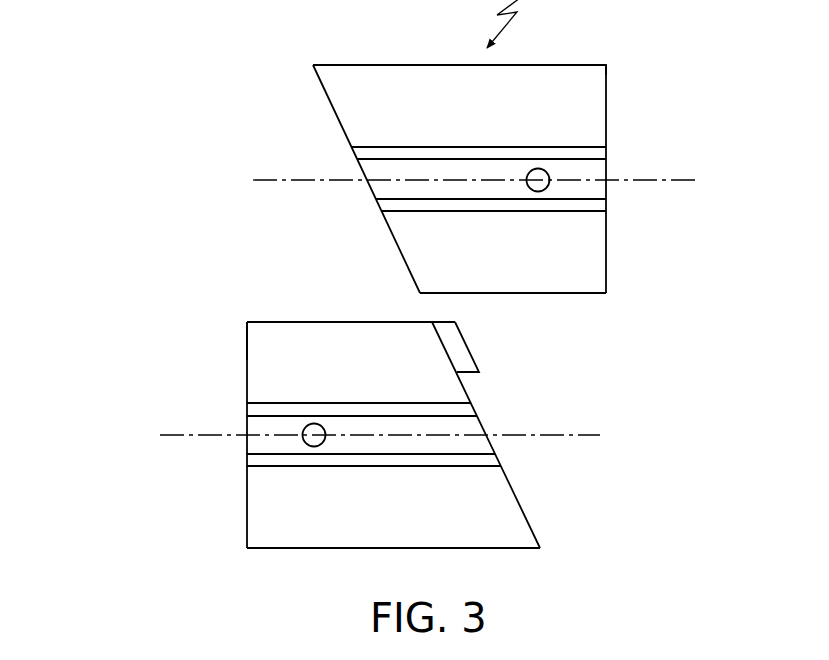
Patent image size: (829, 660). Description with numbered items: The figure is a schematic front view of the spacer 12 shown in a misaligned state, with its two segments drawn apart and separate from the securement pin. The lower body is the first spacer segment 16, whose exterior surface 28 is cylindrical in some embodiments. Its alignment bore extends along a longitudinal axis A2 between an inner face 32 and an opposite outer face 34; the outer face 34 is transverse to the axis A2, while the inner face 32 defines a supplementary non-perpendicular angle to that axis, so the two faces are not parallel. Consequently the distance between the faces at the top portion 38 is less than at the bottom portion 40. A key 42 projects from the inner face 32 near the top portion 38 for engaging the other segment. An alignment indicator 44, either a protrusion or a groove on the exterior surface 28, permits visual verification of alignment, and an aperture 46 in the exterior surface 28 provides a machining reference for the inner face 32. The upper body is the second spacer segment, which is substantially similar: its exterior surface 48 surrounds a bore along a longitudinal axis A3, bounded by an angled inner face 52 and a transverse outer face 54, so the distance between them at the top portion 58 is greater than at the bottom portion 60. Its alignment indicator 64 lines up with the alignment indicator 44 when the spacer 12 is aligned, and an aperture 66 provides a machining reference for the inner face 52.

The spacer 12 is at (125, 98).
The first spacer segment 16 is at (223, 315).
The exterior surface 28 is at (275, 330).
The inner face 32 is at (492, 450).
The outer face 34 is at (247, 383).
The top portion 38 is at (340, 322).
The bottom portion 40 is at (513, 548).
The key 42 is at (458, 352).
The alignment indicator 44 is at (467, 410).
The aperture 46 is at (317, 440).
The longitudinal axis A2 is at (568, 435).
The exterior surface 48 is at (588, 77).
The inner face 52 is at (332, 105).
The outer face 54 is at (607, 123).
The top portion 58 is at (407, 65).
The bottom portion 60 is at (560, 294).
The alignment indicator 64 is at (392, 152).
The aperture 66 is at (537, 184).
The longitudinal axis A3 is at (655, 181).